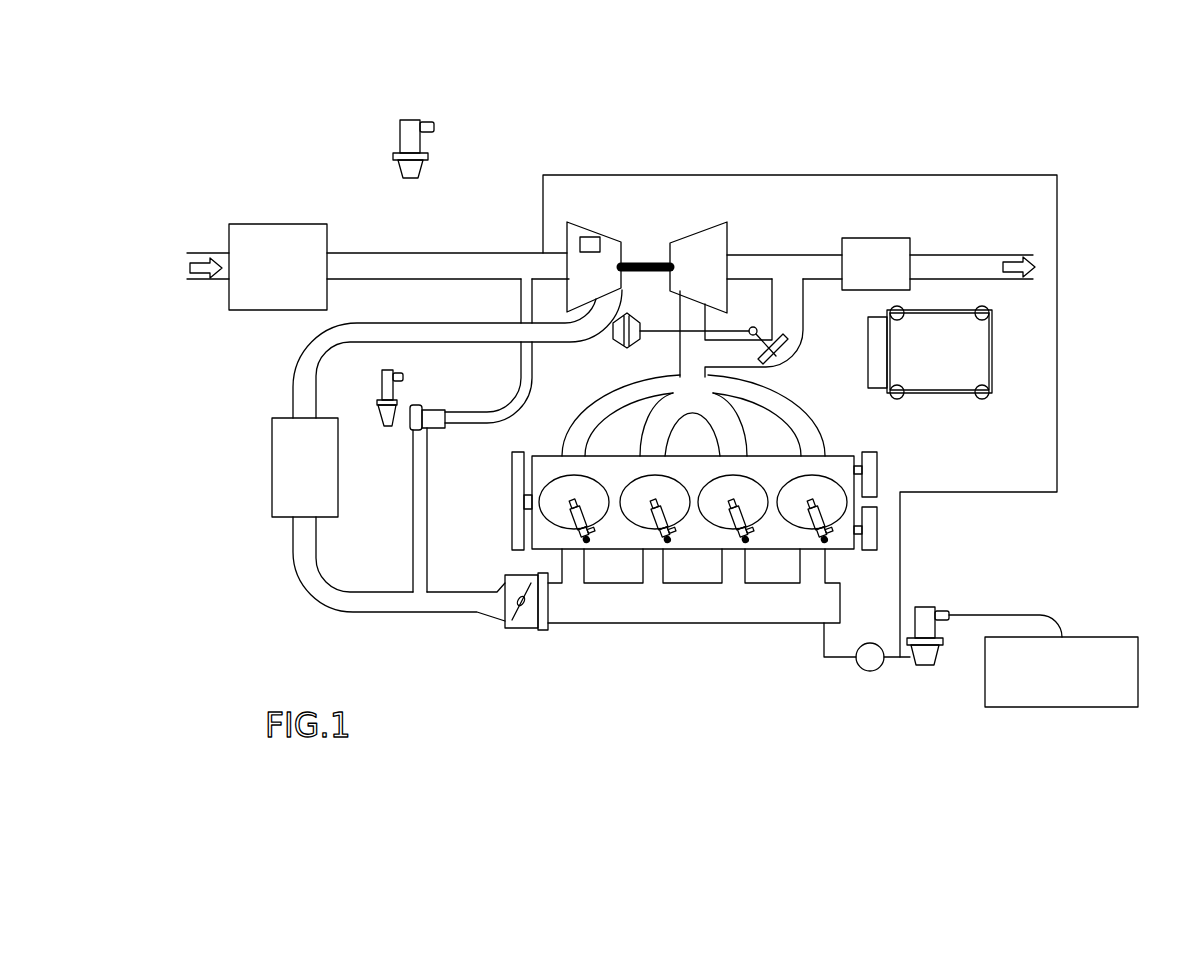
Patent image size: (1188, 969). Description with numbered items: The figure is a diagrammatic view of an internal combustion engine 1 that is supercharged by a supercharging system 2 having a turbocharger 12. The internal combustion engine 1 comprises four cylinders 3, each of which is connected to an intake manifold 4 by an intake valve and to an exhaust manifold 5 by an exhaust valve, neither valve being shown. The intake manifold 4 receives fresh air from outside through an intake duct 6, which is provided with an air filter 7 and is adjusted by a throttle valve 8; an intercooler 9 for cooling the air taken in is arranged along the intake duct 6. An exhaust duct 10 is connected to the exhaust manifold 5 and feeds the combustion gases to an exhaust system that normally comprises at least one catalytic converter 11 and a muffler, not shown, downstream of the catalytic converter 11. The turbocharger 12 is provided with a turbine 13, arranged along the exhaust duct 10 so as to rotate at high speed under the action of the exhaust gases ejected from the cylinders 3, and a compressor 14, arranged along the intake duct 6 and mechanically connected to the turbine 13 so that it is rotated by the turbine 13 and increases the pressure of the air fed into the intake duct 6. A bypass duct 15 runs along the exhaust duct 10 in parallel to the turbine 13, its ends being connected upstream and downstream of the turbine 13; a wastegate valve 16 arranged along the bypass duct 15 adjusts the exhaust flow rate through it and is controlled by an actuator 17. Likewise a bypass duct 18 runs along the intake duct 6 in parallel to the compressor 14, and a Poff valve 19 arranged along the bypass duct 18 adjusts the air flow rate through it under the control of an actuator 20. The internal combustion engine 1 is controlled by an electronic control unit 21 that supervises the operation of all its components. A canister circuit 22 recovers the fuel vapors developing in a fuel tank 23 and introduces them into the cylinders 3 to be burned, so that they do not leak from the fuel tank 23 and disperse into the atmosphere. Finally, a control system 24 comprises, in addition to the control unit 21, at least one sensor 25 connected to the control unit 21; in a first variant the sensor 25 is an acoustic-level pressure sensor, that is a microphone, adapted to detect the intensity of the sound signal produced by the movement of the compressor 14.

The internal combustion engine 1 is at (284, 162).
The supercharging system 2 is at (523, 232).
The cylinders 3 is at (693, 509).
The intake manifold 4 is at (694, 582).
The exhaust manifold 5 is at (693, 413).
The intake duct 6 is at (413, 264).
The air filter 7 is at (278, 267).
The throttle valve 8 is at (518, 632).
The intercooler 9 is at (305, 467).
The exhaust duct 10 is at (816, 262).
The catalytic converter 11 is at (876, 264).
The turbocharger 12 is at (706, 220).
The turbine 13 is at (690, 242).
The compressor 14 is at (602, 248).
The bypass duct 15 is at (793, 312).
The wastegate valve 16 is at (783, 352).
The actuator 17 is at (425, 137).
The bypass duct 18 is at (428, 540).
The Poff valve 19 is at (432, 431).
The actuator 20 is at (400, 390).
The electronic control unit 21 is at (930, 352).
The canister circuit 22 is at (812, 673).
The fuel tank 23 is at (1061, 672).
The control system 24 is at (1090, 307).
The sensor 25 is at (604, 240).